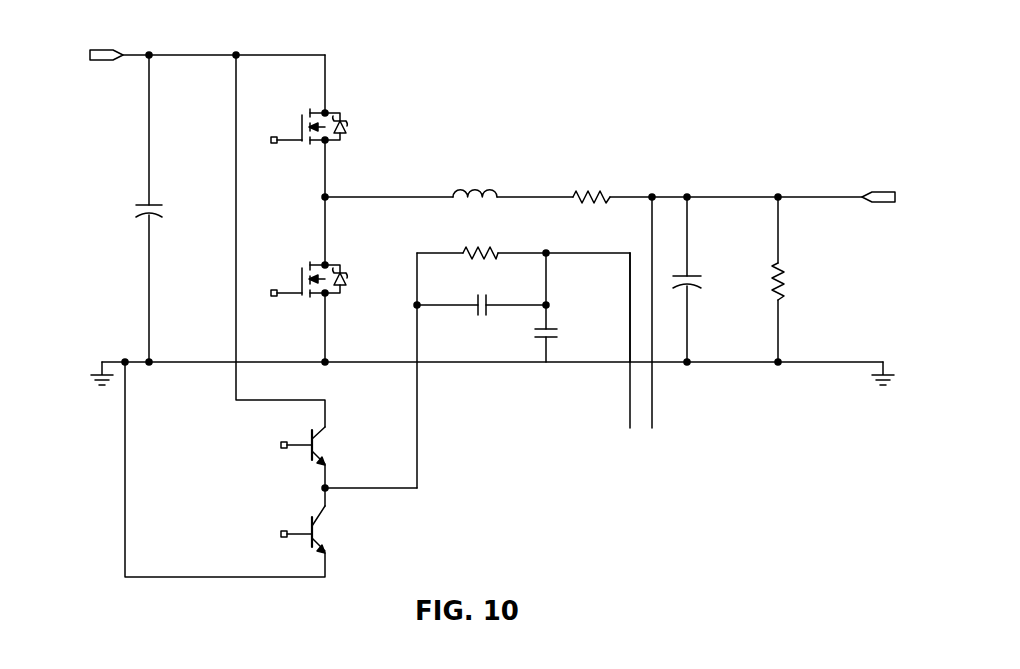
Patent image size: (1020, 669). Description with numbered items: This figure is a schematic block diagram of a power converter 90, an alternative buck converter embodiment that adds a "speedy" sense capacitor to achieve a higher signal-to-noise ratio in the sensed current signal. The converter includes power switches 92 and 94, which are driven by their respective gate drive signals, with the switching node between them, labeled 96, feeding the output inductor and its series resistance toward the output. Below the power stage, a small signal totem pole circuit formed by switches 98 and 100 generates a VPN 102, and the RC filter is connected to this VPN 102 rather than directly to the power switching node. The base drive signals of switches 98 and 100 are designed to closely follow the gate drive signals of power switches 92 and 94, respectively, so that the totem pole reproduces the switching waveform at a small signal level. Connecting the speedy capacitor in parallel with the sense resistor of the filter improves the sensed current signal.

The power converter 90 is at (162, 32).
The power switch 92 is at (331, 111).
The power switch 94 is at (331, 264).
The switching node 96 is at (320, 200).
The switch 98 is at (319, 441).
The switch 100 is at (319, 530).
The VPN 102 is at (319, 493).